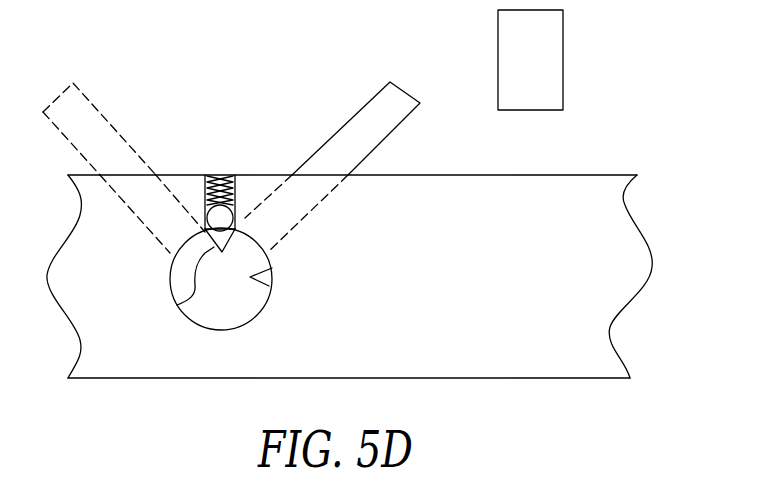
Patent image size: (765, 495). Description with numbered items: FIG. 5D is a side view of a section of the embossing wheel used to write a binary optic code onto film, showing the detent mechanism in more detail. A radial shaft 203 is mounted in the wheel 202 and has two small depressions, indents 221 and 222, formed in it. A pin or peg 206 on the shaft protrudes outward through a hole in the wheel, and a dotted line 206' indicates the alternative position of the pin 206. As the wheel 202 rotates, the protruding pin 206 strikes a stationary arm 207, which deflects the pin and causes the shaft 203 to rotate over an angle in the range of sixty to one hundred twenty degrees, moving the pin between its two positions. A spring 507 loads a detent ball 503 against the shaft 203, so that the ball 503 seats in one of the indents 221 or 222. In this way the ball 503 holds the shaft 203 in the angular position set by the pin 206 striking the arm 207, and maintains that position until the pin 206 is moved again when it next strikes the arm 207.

The wheel 202 is at (493, 378).
The shaft 203 is at (245, 328).
The peg 206 is at (369, 167).
The alternative position of pin 206' is at (128, 155).
The arm 207 is at (563, 62).
The indent 221 is at (268, 280).
The indent 222 is at (177, 305).
The detent ball 503 is at (230, 218).
The spring 507 is at (236, 187).